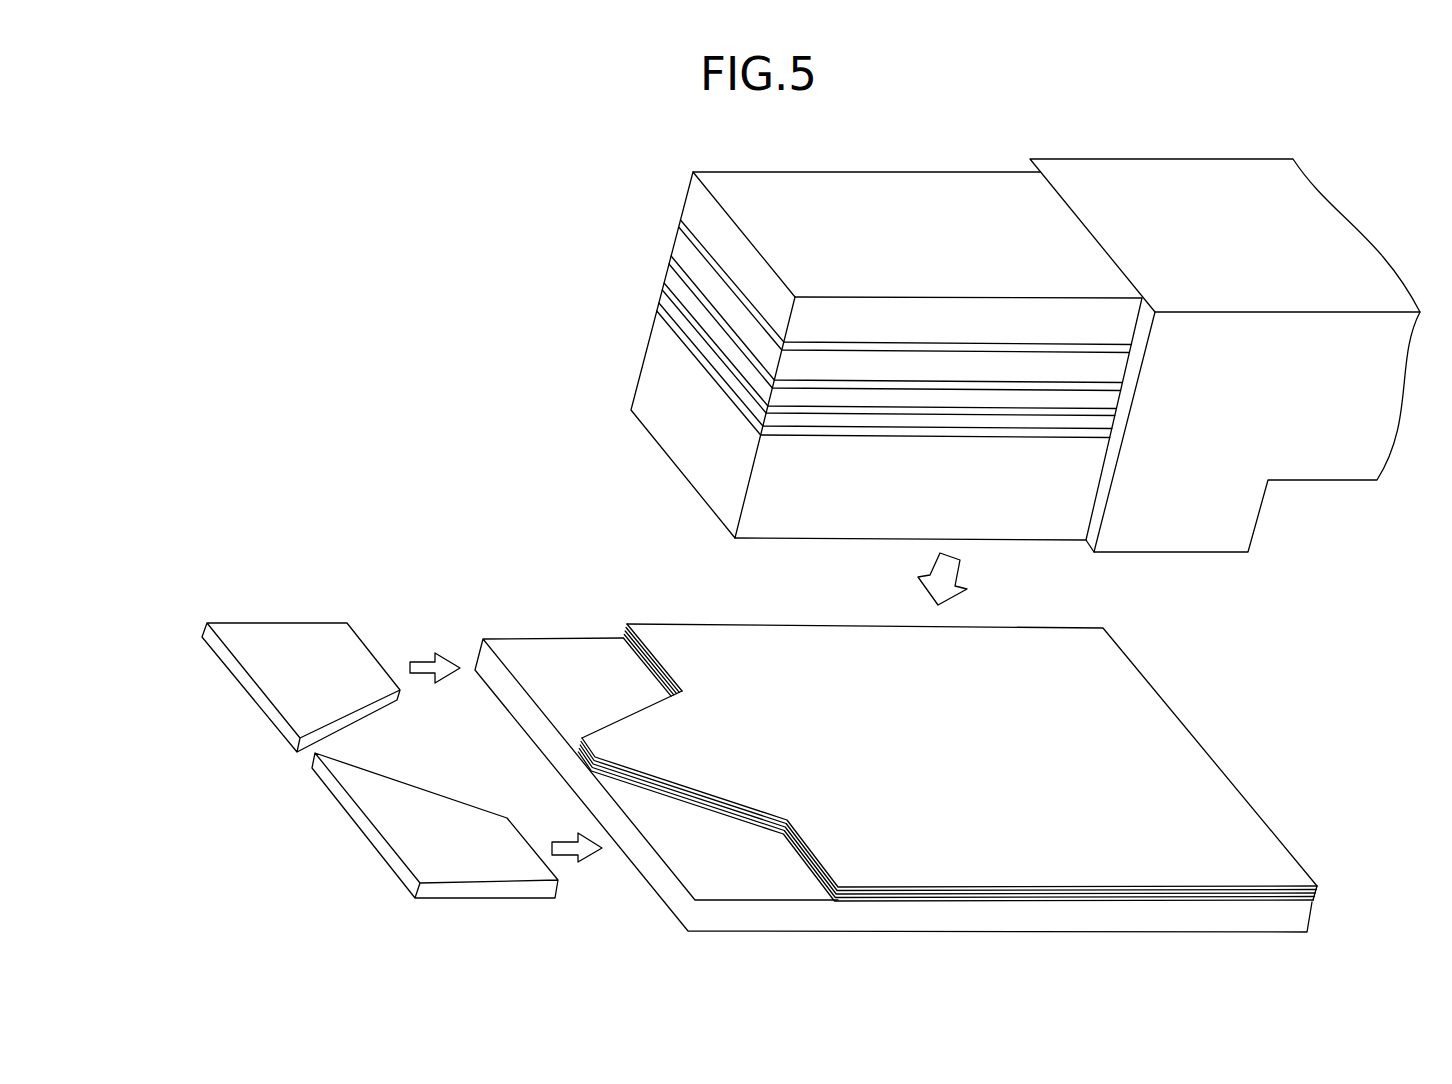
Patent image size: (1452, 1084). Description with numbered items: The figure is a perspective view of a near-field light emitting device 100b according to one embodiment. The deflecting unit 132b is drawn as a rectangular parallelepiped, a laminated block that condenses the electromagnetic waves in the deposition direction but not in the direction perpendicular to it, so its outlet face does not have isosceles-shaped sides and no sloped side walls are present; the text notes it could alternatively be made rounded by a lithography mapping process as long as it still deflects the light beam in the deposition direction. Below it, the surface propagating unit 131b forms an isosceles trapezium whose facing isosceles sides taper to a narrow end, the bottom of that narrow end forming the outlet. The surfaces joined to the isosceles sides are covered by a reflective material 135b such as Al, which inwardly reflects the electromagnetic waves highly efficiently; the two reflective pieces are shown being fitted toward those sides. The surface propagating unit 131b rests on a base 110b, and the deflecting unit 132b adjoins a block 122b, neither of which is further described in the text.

The near-field light emitting device 100b is at (992, 343).
The base plate 110b is at (682, 910).
The header block 122b is at (1235, 518).
The surface propagating unit 131b is at (1200, 792).
The deflecting unit 132b is at (663, 310).
The reflective material 135b is at (343, 797).